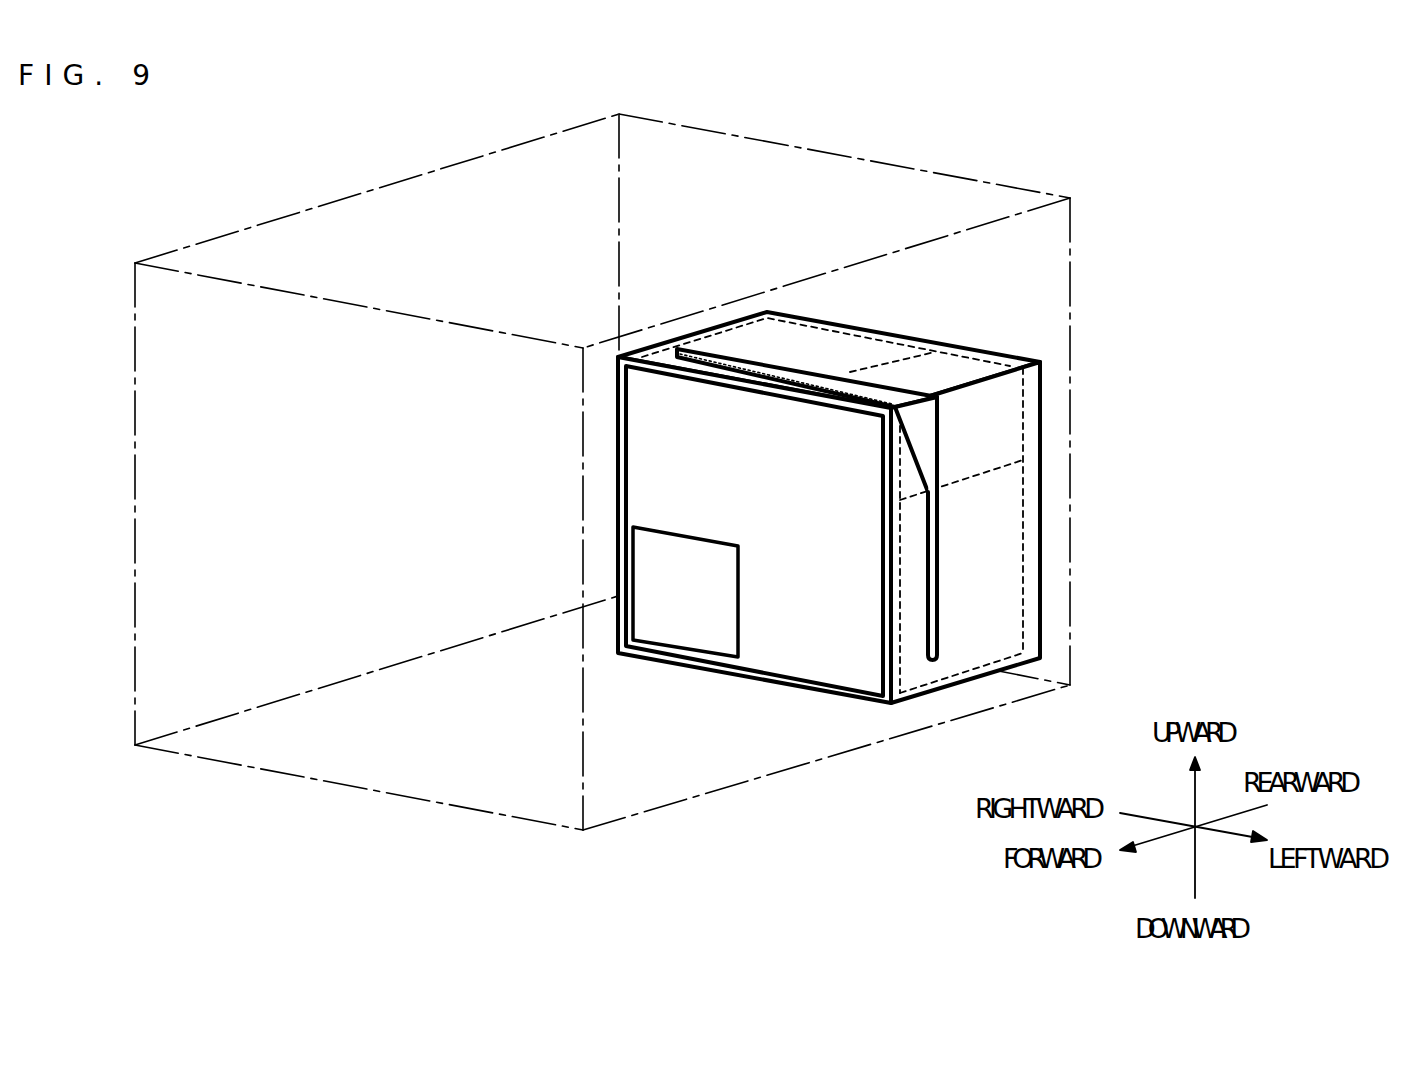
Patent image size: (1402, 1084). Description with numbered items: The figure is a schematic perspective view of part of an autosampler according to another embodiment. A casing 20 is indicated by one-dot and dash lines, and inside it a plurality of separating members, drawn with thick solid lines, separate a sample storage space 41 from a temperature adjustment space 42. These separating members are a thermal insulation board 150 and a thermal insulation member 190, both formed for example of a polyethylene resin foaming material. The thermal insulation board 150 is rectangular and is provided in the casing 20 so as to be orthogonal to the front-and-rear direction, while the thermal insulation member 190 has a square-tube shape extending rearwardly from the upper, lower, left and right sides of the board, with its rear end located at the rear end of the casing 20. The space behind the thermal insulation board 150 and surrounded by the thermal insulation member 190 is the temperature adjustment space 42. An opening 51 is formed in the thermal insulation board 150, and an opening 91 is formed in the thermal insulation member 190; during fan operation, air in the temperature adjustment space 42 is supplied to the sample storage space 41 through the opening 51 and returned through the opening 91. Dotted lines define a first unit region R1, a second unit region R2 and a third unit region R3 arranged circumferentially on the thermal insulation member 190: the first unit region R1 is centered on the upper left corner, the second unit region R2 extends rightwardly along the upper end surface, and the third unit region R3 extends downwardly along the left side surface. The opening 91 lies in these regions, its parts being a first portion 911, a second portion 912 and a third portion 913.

The casing 20 is at (312, 232).
The sample storage space 41 is at (412, 566).
The temperature adjustment space 42 is at (827, 545).
The opening 51 is at (675, 552).
The opening 91 is at (966, 471).
The first portion 911 is at (918, 428).
The second portion 912 is at (790, 365).
The third portion 913 is at (930, 565).
The thermal insulation board 150 is at (754, 552).
The thermal insulation member 190 is at (963, 667).
The first unit region R1 is at (1003, 462).
The second unit region R2 is at (783, 354).
The third unit region R3 is at (997, 607).